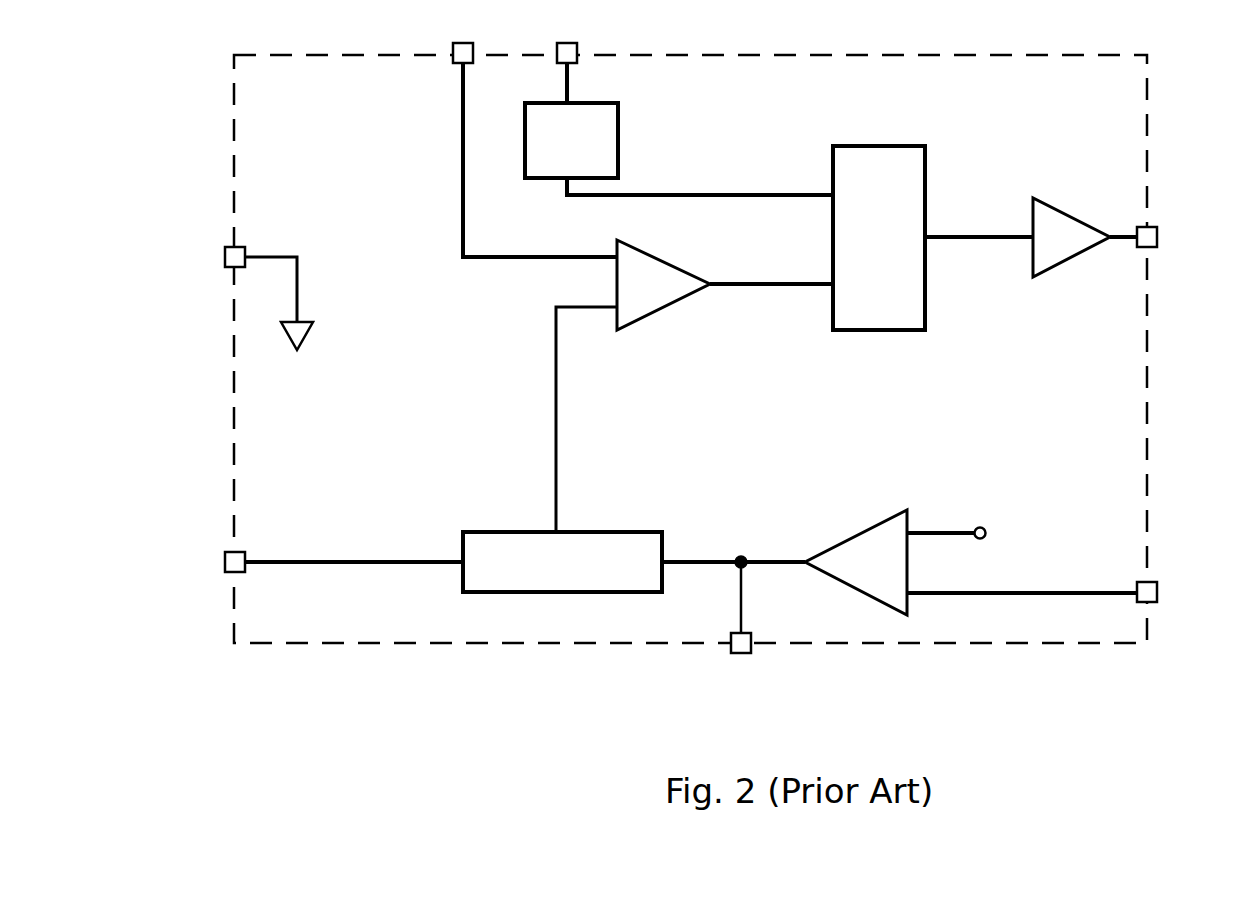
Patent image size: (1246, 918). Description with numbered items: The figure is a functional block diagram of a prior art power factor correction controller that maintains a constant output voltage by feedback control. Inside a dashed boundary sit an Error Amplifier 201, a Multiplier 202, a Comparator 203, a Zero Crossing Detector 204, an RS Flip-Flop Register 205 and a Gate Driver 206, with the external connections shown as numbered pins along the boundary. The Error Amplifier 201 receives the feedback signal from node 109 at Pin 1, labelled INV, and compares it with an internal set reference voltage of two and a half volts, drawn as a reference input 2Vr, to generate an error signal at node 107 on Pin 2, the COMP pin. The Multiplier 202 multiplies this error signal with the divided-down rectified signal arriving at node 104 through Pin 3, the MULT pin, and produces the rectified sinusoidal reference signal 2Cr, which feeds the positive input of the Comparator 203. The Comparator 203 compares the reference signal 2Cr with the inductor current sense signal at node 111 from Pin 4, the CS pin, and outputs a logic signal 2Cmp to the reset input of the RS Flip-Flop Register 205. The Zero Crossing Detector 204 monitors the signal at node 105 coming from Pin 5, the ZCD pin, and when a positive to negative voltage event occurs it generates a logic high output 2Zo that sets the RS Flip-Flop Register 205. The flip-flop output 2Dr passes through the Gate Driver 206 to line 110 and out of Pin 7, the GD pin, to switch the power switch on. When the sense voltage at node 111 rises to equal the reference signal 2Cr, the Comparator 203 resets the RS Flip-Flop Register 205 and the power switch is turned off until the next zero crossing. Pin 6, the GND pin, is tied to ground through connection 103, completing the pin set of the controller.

The Pin 1 is at (1175, 602).
The Pin 2 is at (741, 644).
The Pin 3 is at (206, 547).
The Pin 4 is at (457, 45).
The Pin 5 is at (566, 45).
The GND pin 6 is at (218, 253).
The GD pin 7 is at (1170, 236).
The ground connection 103 is at (290, 255).
The node 104 is at (320, 562).
The node 105 is at (568, 82).
The node 107 is at (741, 575).
The node 109 is at (1075, 593).
The gate drive output line 110 is at (1128, 240).
The node 111 is at (463, 108).
The Error Amplifier 201 is at (830, 540).
The Multiplier 202 is at (528, 532).
The Comparator 203 is at (670, 305).
The Zero Crossing Detector 204 is at (618, 108).
The RS Flip-Flop Register 205 is at (893, 330).
The Gate Driver 206 is at (1063, 213).
The zero crossing detector output signal 2Zo is at (672, 195).
The comparator output signal 2Cmp is at (745, 284).
The rectified sinusoidal reference signal 2Cr is at (556, 435).
The drive signal 2Dr is at (953, 237).
The voltage reference signal 2Vr is at (943, 533).